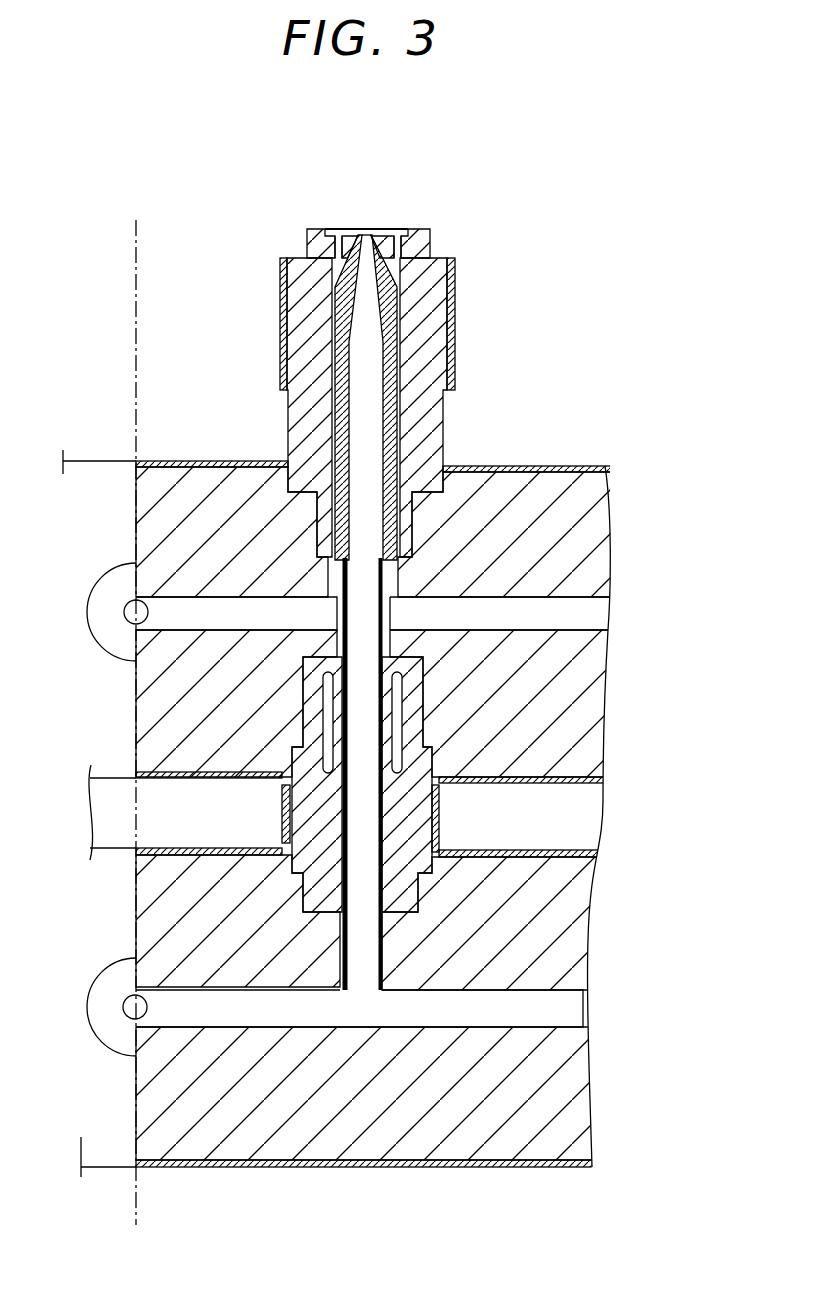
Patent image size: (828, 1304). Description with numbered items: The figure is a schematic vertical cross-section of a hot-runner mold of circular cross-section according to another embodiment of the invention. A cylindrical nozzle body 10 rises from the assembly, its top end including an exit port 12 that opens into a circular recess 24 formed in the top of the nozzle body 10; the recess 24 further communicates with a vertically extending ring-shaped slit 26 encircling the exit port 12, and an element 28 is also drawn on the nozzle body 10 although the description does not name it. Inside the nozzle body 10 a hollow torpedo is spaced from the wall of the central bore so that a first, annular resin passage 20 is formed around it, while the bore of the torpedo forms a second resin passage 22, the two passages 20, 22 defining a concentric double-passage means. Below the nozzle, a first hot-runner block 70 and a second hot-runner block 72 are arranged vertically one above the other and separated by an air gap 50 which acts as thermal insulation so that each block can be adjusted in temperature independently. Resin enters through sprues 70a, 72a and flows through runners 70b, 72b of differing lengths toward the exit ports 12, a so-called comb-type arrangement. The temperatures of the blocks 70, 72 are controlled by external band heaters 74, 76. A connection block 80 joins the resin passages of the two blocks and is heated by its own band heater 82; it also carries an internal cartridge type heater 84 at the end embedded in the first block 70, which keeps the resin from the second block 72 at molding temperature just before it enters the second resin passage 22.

The nozzle body 10 is at (428, 446).
The exit port 12 is at (405, 240).
The first annular resin passage 20 is at (396, 314).
The second resin passage 22 is at (365, 375).
The circular recess 24 is at (365, 233).
The ring-shaped slit 26 is at (323, 245).
The sleeve 28 is at (455, 333).
The air gap 50 is at (572, 818).
The first hot-runner block 70 is at (545, 485).
The sprue 70a is at (112, 645).
The runner 70b is at (553, 620).
The second hot-runner block 72 is at (552, 873).
The sprue 72a is at (110, 1040).
The runner 72b is at (560, 1013).
The external band heater 74 is at (200, 458).
The external band heater 76 is at (385, 1168).
The connection block 80 is at (415, 820).
The band heater 82 is at (282, 810).
The internal cartridge type heater 84 is at (398, 697).